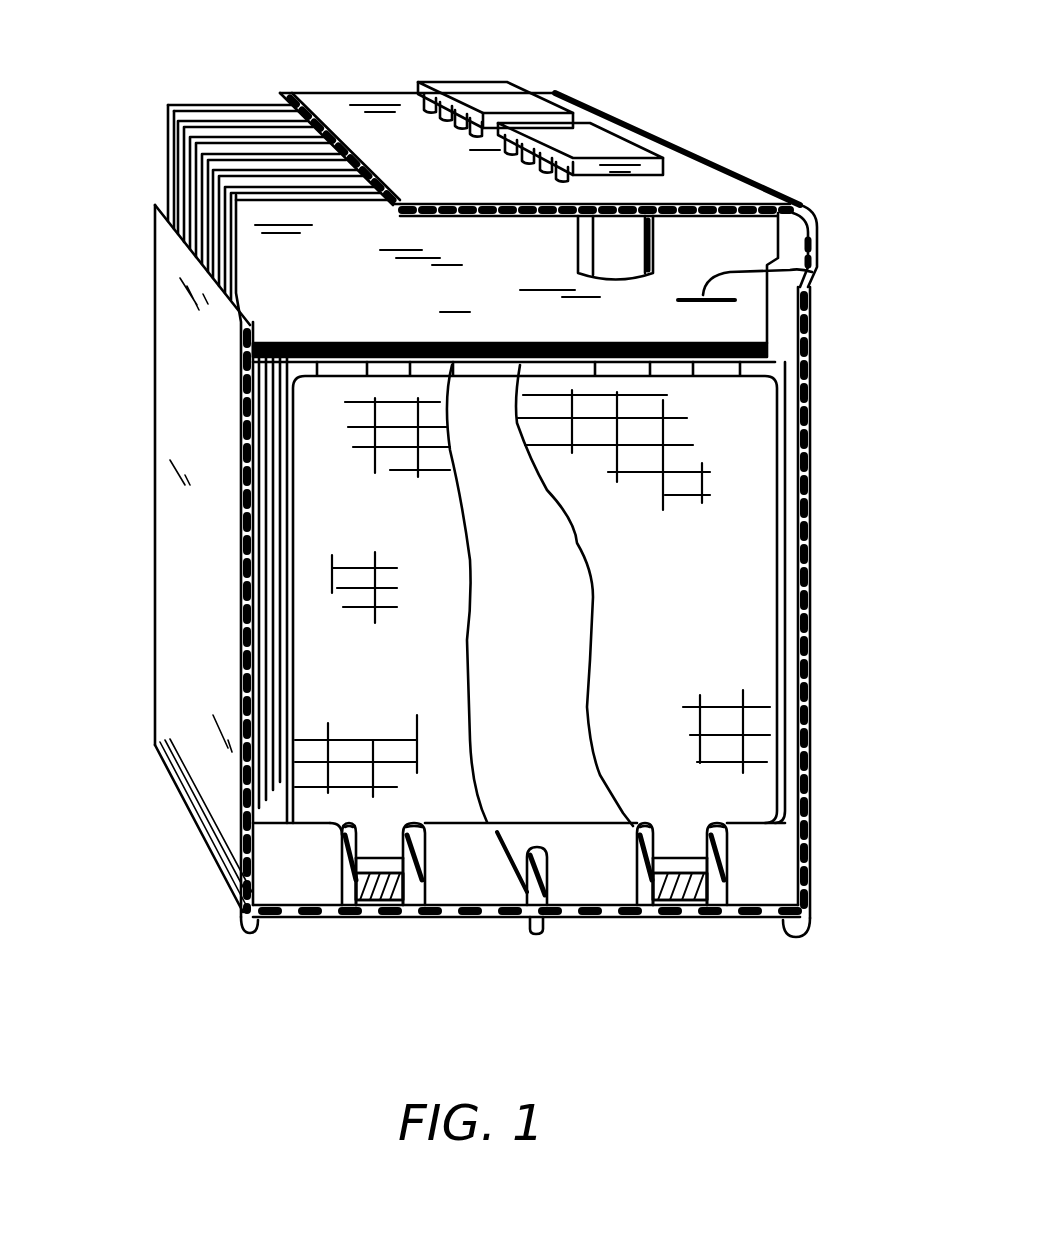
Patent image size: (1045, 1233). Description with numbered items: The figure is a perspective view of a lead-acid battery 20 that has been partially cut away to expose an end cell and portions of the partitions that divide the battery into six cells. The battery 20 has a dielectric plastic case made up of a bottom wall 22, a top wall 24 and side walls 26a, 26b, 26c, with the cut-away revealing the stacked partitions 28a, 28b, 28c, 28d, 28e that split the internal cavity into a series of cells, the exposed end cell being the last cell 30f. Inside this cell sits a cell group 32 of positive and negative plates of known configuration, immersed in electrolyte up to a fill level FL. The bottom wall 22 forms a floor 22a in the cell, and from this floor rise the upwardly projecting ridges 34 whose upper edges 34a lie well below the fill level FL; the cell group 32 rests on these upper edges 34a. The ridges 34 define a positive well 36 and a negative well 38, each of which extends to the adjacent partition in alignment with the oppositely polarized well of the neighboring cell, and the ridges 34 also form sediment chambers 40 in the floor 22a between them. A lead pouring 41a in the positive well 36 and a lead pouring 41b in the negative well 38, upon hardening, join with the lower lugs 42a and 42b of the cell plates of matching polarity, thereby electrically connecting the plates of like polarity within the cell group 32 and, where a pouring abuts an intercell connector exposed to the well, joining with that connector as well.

The battery 20 is at (150, 668).
The bottom wall 22 is at (290, 920).
The floor 22a is at (475, 852).
The top wall 24 is at (817, 228).
The side wall 26a is at (200, 540).
The side wall 26b is at (810, 508).
The side wall 26c is at (212, 102).
The partition 28a is at (168, 133).
The partition 28b is at (172, 167).
The partition 28c is at (165, 200).
The partition 28d is at (213, 230).
The partition 28e is at (197, 277).
The last cell 30f is at (290, 300).
The cell group 32 is at (750, 433).
The ridges 34 is at (333, 850).
The upper edges 34a is at (430, 815).
The positive wells 36 is at (380, 887).
The lead pouring 41a is at (379, 886).
The negative wells 38 is at (680, 887).
The lead pouring 41b is at (680, 886).
The sediment chambers 40 is at (282, 877).
The lower lug 42a is at (355, 872).
The lower lug 42b is at (672, 887).
The fill level FL is at (812, 272).